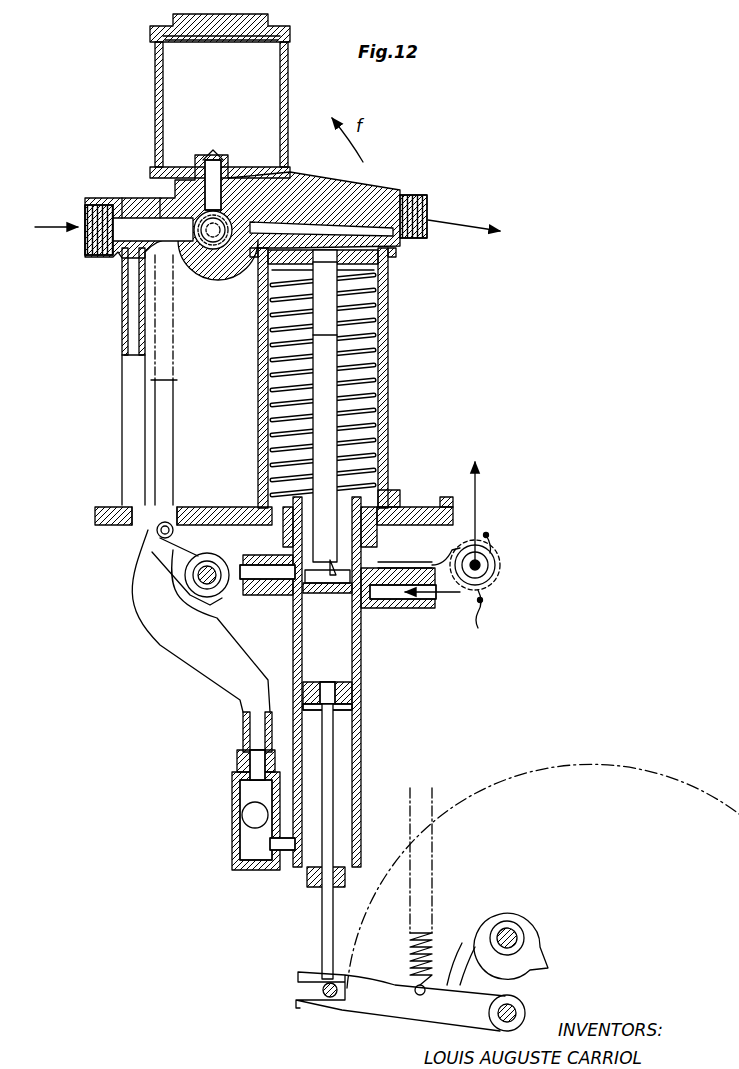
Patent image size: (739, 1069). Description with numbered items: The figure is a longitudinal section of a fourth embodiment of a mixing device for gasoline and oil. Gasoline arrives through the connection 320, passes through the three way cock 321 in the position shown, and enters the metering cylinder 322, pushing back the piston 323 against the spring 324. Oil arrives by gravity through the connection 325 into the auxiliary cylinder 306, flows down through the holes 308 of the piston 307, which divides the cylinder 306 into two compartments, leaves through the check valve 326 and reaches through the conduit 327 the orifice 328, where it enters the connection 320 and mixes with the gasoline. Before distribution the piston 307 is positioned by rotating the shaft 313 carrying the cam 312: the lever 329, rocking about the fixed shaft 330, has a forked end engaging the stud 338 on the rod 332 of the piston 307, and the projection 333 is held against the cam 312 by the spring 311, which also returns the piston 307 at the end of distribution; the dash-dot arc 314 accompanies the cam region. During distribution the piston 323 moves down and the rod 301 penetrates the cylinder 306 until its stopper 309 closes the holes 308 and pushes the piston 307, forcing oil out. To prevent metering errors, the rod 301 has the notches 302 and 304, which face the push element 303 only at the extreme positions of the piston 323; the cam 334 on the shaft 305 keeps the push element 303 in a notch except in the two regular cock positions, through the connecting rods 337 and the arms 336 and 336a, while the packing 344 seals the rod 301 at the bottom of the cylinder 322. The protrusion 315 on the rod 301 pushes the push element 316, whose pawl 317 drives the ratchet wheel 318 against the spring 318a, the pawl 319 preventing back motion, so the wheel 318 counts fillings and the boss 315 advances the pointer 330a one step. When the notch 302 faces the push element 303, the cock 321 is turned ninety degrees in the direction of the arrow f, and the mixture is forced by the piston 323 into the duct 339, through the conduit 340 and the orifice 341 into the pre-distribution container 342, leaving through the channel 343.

The rod 301 is at (337, 410).
The notch 302 is at (320, 340).
The push element 303 is at (290, 596).
The notch 304 is at (333, 560).
The shaft 305 is at (209, 565).
The auxiliary cylinder 306 is at (354, 665).
The piston 307 is at (354, 708).
The holes 308 is at (340, 680).
The stopper 309 is at (318, 600).
The spring 311 is at (440, 858).
The cam 312 is at (544, 962).
The shaft 313 is at (508, 928).
The cam path arc 314 is at (522, 778).
The protrusion 315 is at (335, 593).
The push element 316 is at (405, 562).
The pawl 317 is at (448, 548).
The ratchet wheel 318 is at (497, 568).
The spring 318a is at (491, 619).
The pawl 319 is at (492, 532).
The connection 320 is at (86, 250).
The three way cock 321 is at (232, 210).
The metering cylinder 322 is at (262, 330).
The piston 323 is at (383, 268).
The spring 324 is at (270, 452).
The connection 325 is at (420, 605).
The check valve 326 is at (240, 812).
The conduit 327 is at (223, 668).
The orifice 328 is at (131, 218).
The lever 329 is at (362, 1005).
The fixed shaft 330 is at (526, 1012).
The pointer 330a is at (478, 495).
The rod 332 is at (336, 780).
The projection 333 is at (460, 945).
The cam 334 is at (200, 585).
The arm 336 is at (163, 376).
The arm 336a is at (172, 545).
The connecting rods 337 is at (168, 462).
The stud 338 is at (320, 998).
The duct 339 is at (230, 226).
The conduit 340 is at (213, 175).
The orifice 341 is at (213, 152).
The pre-distribution container 342 is at (160, 80).
The channel 343 is at (376, 205).
The packing 344 is at (388, 500).